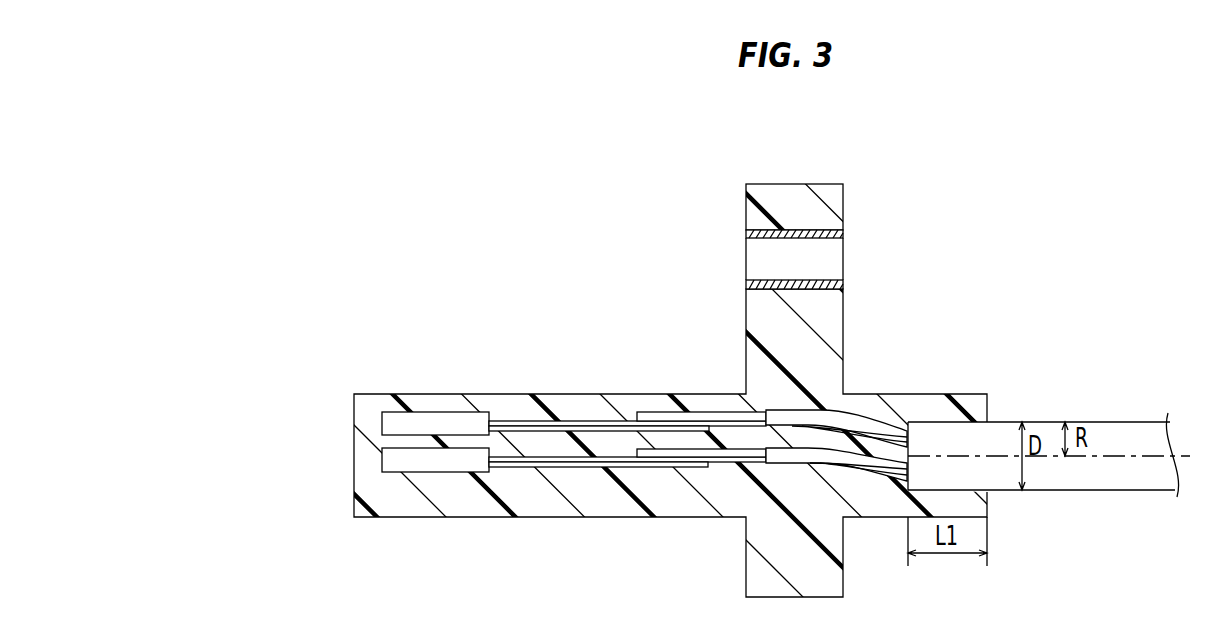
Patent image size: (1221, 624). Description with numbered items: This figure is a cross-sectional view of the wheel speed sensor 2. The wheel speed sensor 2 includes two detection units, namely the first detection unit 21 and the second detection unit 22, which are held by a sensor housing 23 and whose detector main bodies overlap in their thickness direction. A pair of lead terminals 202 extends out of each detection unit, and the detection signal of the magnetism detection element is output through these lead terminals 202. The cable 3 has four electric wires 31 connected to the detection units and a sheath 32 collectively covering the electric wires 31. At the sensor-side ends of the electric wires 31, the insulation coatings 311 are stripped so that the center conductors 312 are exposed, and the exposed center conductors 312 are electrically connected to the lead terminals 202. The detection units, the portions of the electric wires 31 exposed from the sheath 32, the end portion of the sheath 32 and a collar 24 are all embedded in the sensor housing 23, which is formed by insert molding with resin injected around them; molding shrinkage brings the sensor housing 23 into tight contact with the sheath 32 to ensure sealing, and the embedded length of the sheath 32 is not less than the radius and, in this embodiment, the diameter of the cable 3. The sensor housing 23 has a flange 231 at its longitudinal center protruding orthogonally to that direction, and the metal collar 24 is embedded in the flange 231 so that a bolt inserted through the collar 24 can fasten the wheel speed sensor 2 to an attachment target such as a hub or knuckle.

The wheel speed sensor 2 is at (415, 284).
The cable 3 is at (1049, 435).
The first detection unit 21 is at (413, 423).
The second detection unit 22 is at (413, 460).
The sensor housing 23 is at (828, 313).
The collar 24 is at (841, 236).
The electric wires 31 is at (880, 478).
The sheath 32 is at (1108, 435).
The lead terminals 202 is at (566, 421).
The flange 231 is at (832, 204).
The insulation coatings 311 is at (769, 412).
The center conductors 312 is at (655, 412).